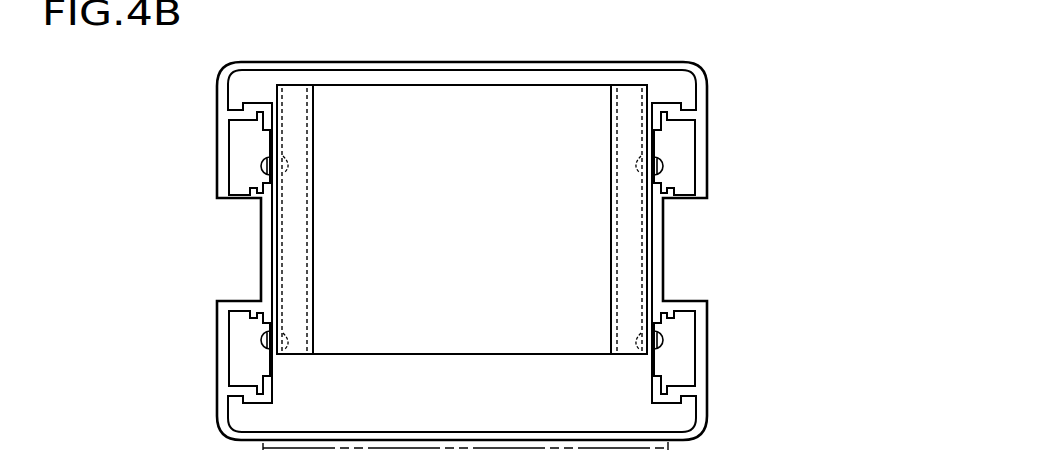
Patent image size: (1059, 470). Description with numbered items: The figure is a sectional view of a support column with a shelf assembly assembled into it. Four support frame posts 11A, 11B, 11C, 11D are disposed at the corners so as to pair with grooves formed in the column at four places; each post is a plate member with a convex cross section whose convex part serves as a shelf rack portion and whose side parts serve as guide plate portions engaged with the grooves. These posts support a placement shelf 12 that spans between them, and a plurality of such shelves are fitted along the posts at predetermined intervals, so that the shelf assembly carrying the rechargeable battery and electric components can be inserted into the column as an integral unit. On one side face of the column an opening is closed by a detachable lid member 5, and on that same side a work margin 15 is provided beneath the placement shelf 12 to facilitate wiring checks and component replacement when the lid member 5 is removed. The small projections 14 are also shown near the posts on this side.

The lid member 5 is at (672, 447).
The placement shelf 12 is at (466, 98).
The work margin 15 is at (479, 401).
The support frame post 11A is at (268, 147).
The support frame post 11B is at (270, 363).
The support frame post 11C is at (653, 146).
The support frame post 11D is at (653, 363).
The projection 14 is at (662, 166).